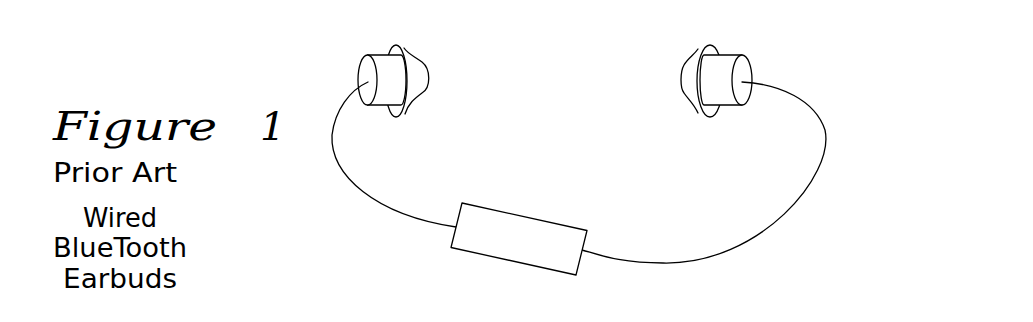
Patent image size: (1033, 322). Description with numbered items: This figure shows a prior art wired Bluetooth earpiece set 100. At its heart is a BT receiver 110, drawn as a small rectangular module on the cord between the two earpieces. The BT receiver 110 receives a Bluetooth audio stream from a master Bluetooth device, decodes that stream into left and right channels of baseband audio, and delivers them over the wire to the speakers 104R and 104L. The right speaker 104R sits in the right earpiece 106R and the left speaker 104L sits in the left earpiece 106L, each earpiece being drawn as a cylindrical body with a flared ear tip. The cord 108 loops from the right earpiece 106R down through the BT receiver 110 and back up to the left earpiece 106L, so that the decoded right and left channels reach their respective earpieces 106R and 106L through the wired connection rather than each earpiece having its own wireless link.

The wired Bluetooth earpiece set 100 is at (197, 95).
The right speaker 104R is at (361, 57).
The left speaker 104L is at (730, 106).
The right earpiece 106R is at (422, 64).
The left earpiece 106L is at (687, 70).
The cable 108 is at (823, 105).
The BT receiver 110 is at (472, 205).